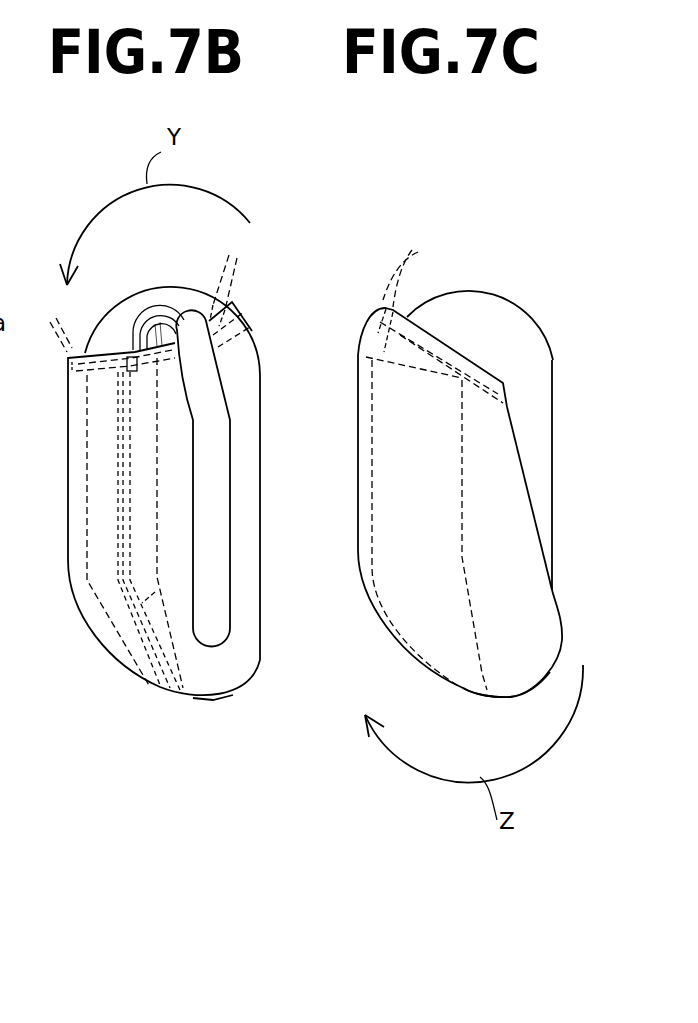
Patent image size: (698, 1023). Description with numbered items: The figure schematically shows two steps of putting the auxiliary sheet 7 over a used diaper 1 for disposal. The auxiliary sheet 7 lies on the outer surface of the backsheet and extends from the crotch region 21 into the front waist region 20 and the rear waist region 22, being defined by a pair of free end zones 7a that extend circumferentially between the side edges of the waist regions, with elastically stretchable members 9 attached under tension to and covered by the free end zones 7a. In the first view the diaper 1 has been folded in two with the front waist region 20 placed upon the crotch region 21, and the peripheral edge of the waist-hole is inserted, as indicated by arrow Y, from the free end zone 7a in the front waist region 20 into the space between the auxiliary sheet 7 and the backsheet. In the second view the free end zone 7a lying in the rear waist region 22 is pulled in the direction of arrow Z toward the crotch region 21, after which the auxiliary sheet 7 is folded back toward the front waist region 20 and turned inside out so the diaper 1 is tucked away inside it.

In FIG. 7B, the diaper 1 is at (147, 288).
In FIG. 7C, the diaper 1 is at (478, 300).
In FIG. 7B, the auxiliary sheet 7 is at (248, 547).
In FIG. 7C, the auxiliary sheet 7 is at (423, 592).
In FIG. 7B, the free end zones 7a is at (83, 384).
In FIG. 7C, the free end zones 7a is at (368, 330).
In FIG. 7B, the elastically stretchable members 9 is at (145, 293).
In FIG. 7C, the elastically stretchable members 9 is at (404, 289).
In FIG. 7B, the front waist region 20 is at (107, 475).
In FIG. 7B, the crotch region 21 is at (223, 663).
In FIG. 7C, the crotch region 21 is at (528, 672).
In FIG. 7B, the rear waist region 22 is at (147, 533).